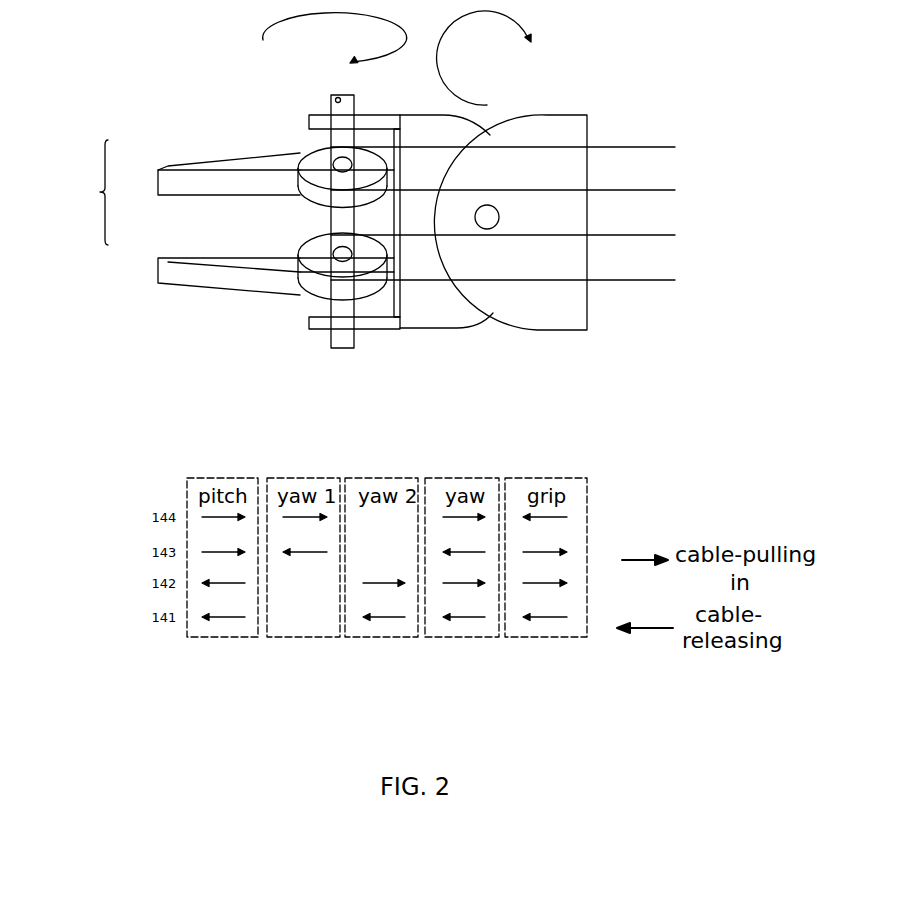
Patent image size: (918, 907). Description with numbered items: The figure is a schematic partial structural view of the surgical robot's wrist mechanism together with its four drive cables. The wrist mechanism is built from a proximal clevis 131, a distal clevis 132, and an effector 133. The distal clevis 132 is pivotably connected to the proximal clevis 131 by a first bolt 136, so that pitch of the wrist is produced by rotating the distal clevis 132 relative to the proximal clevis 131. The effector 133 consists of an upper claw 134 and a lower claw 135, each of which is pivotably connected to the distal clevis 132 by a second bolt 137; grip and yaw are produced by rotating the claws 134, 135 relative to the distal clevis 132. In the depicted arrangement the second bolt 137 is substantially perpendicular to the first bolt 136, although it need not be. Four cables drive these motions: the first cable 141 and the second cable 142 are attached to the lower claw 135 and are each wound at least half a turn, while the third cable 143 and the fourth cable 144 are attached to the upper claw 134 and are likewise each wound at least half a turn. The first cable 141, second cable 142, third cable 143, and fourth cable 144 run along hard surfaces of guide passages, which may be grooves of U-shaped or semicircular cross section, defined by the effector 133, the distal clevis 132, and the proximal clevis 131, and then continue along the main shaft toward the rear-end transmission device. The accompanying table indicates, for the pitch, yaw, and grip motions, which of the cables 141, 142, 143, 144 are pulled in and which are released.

The proximal clevis 131 is at (568, 128).
The distal clevis 132 is at (430, 320).
The effector 133 is at (89, 192).
The upper claw 134 is at (170, 180).
The lower claw 135 is at (170, 266).
The first bolt 136 is at (499, 216).
The second bolt 137 is at (337, 93).
The first cable 141 is at (668, 280).
The second cable 142 is at (668, 235).
The third cable 143 is at (668, 190).
The fourth cable 144 is at (668, 147).